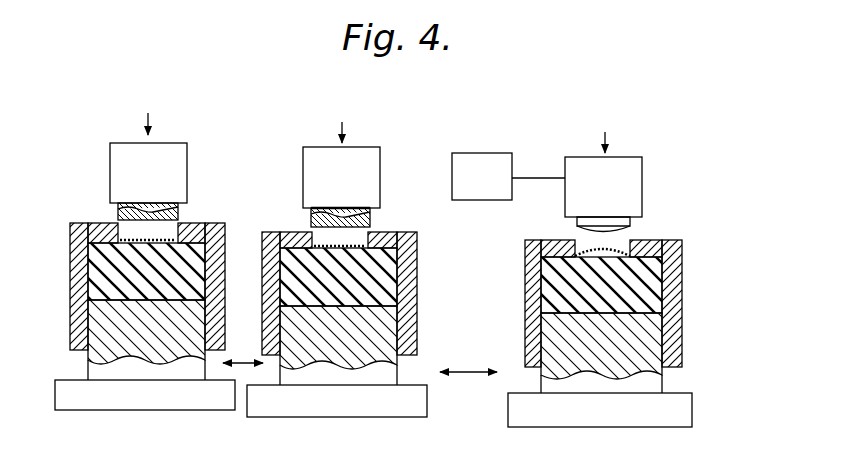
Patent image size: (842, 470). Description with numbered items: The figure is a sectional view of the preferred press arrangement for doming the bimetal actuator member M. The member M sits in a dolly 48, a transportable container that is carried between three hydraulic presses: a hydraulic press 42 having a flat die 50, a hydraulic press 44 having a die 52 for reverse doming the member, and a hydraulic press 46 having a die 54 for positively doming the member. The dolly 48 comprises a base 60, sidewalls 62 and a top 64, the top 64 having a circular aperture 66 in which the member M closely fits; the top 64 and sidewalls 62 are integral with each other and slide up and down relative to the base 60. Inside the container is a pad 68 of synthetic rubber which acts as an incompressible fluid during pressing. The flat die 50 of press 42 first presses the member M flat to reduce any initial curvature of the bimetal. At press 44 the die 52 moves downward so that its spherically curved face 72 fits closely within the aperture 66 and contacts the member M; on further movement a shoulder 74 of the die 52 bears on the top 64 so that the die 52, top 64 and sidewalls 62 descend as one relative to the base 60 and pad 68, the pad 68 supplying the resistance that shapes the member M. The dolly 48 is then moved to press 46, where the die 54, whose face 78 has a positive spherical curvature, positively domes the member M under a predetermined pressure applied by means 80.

The hydraulic press 42 is at (172, 143).
The hydraulic press 44 is at (368, 143).
The hydraulic press 46 is at (637, 155).
The dolly 48 is at (265, 372).
The flat die 50 is at (163, 205).
The die 52 is at (310, 217).
The die 54 is at (577, 222).
The base 60 is at (355, 400).
The sidewalls 62 is at (410, 305).
The top 64 is at (397, 237).
The circular aperture 66 is at (311, 240).
The pad 68 is at (393, 277).
The face 72 is at (347, 217).
The shoulder 74 is at (307, 214).
The face 78 is at (625, 232).
The means 80 is at (488, 190).
The member M is at (124, 233).